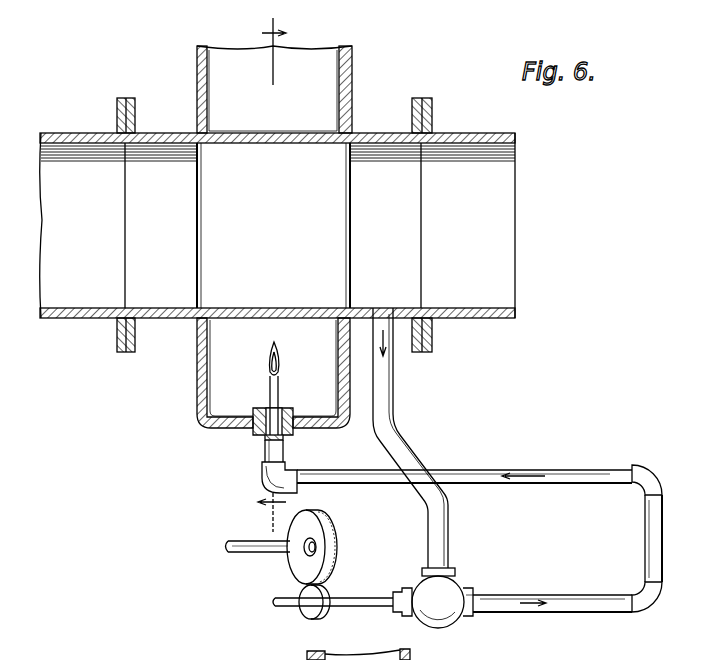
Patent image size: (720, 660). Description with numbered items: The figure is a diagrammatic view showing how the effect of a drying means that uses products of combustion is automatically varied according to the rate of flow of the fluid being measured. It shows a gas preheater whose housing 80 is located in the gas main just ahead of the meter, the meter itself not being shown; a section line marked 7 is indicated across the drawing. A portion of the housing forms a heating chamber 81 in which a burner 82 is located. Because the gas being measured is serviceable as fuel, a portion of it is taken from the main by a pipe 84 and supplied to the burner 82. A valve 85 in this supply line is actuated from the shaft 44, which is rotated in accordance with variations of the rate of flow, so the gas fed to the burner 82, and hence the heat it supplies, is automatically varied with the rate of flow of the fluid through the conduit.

The section line 7- 7 is at (272, 274).
The shaft 44 is at (237, 541).
The housing 80 is at (174, 318).
The heating chamber 81 is at (228, 378).
The burner 82 is at (276, 391).
The pipe 84 is at (404, 456).
The valve 85 is at (450, 624).